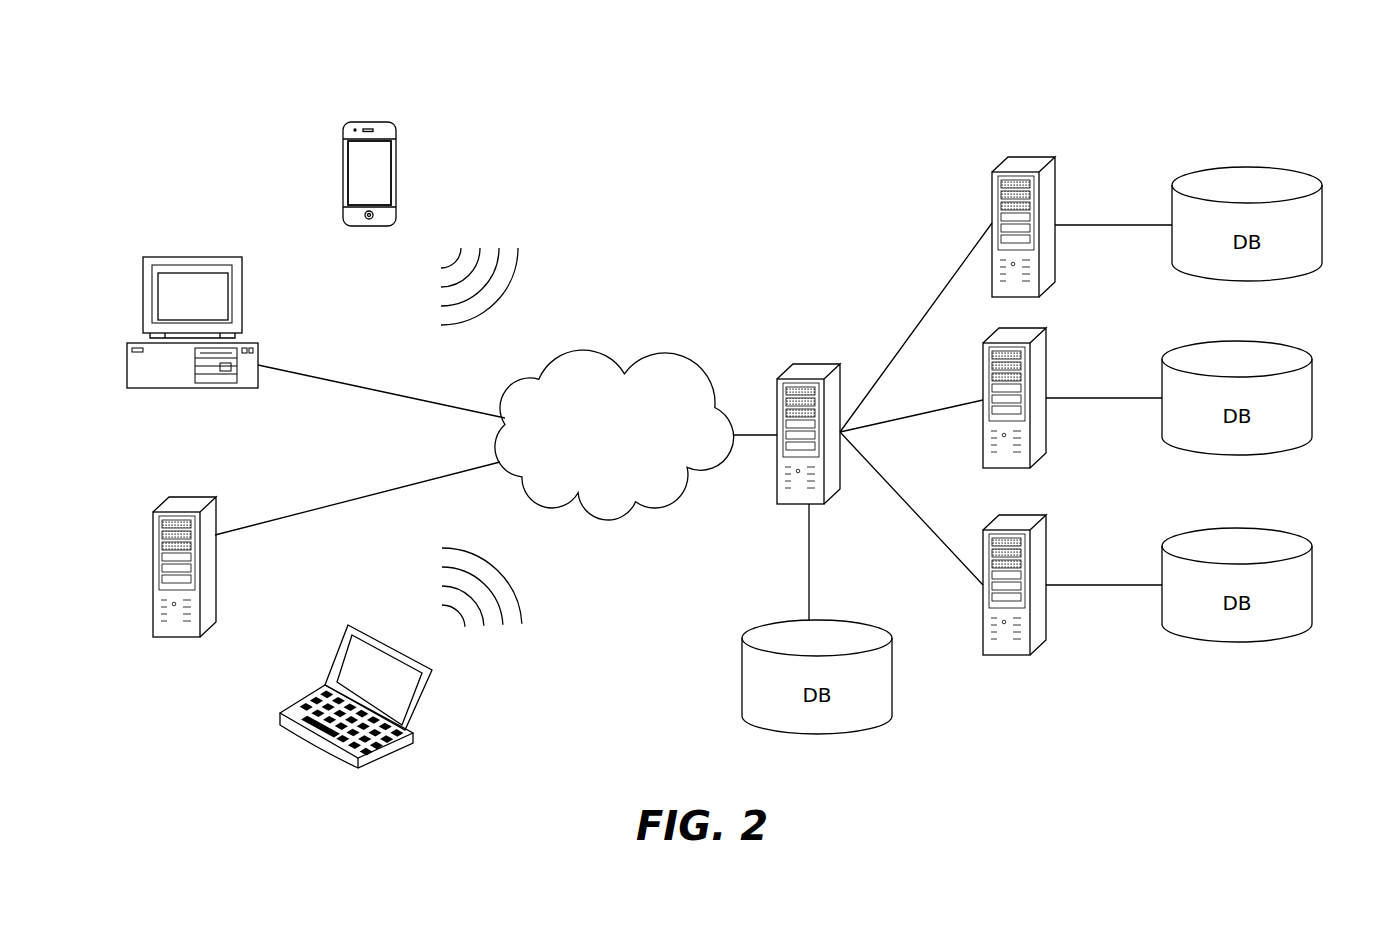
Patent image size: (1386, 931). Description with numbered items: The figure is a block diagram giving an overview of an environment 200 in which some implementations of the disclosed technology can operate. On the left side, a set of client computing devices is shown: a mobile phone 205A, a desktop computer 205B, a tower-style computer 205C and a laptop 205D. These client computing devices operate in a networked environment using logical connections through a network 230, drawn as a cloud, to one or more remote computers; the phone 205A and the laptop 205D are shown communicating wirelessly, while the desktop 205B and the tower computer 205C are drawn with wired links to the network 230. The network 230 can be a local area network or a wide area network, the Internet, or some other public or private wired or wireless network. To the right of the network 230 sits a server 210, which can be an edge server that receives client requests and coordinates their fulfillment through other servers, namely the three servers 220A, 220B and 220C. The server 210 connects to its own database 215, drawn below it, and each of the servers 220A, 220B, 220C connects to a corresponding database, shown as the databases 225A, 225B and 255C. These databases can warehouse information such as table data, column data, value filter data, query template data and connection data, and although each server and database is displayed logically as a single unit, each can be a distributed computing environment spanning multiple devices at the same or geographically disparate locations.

The environment 200 is at (836, 126).
The client computing device 205A is at (386, 123).
The client computing device 205B is at (232, 258).
The client computing device 205C is at (202, 496).
The client computing device 205D is at (423, 698).
The server 210 is at (806, 364).
The database 215 is at (868, 622).
The server 220A is at (1054, 160).
The server 220B is at (1046, 330).
The server 220C is at (1046, 517).
The database 225A is at (1243, 168).
The database 225B is at (1233, 342).
The database 255C is at (1233, 529).
The network 230 is at (668, 355).